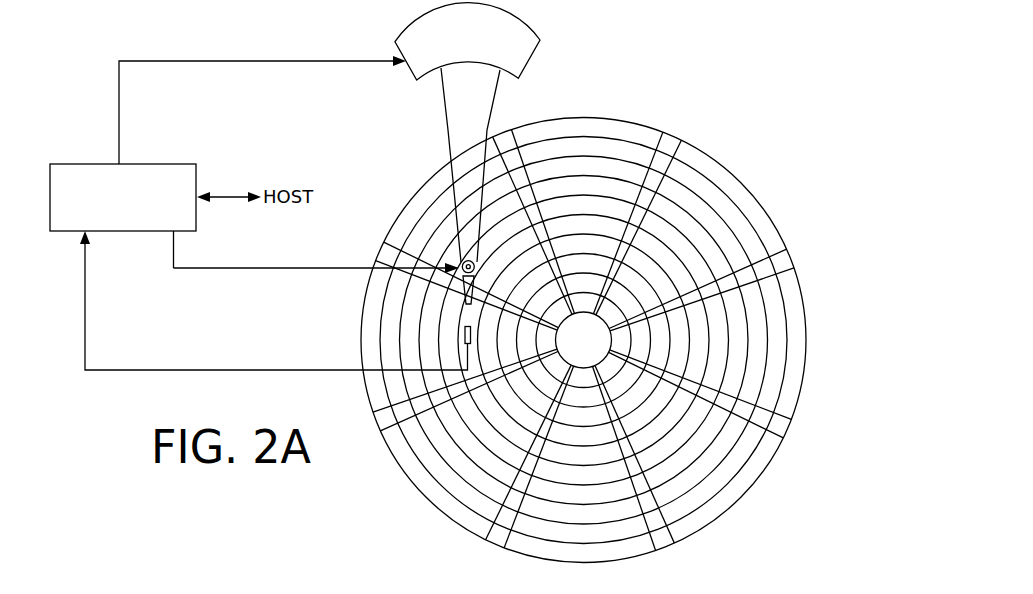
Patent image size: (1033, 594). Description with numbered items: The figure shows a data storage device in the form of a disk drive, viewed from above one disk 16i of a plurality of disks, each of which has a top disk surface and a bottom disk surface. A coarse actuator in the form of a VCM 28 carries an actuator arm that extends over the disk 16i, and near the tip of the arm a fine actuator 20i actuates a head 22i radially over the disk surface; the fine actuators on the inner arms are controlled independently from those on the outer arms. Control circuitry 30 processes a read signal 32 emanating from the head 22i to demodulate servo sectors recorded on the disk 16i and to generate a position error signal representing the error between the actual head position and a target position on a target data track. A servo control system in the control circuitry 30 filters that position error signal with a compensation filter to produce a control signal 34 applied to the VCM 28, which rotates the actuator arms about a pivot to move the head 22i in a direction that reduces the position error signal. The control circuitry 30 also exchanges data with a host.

The disk 16i is at (740, 166).
The inner fine actuator 20i is at (488, 258).
The head 22i is at (450, 333).
The VCM 28 is at (413, 72).
The control circuitry 30 is at (160, 164).
The read signal 32 is at (296, 370).
The control signal 34 is at (119, 105).